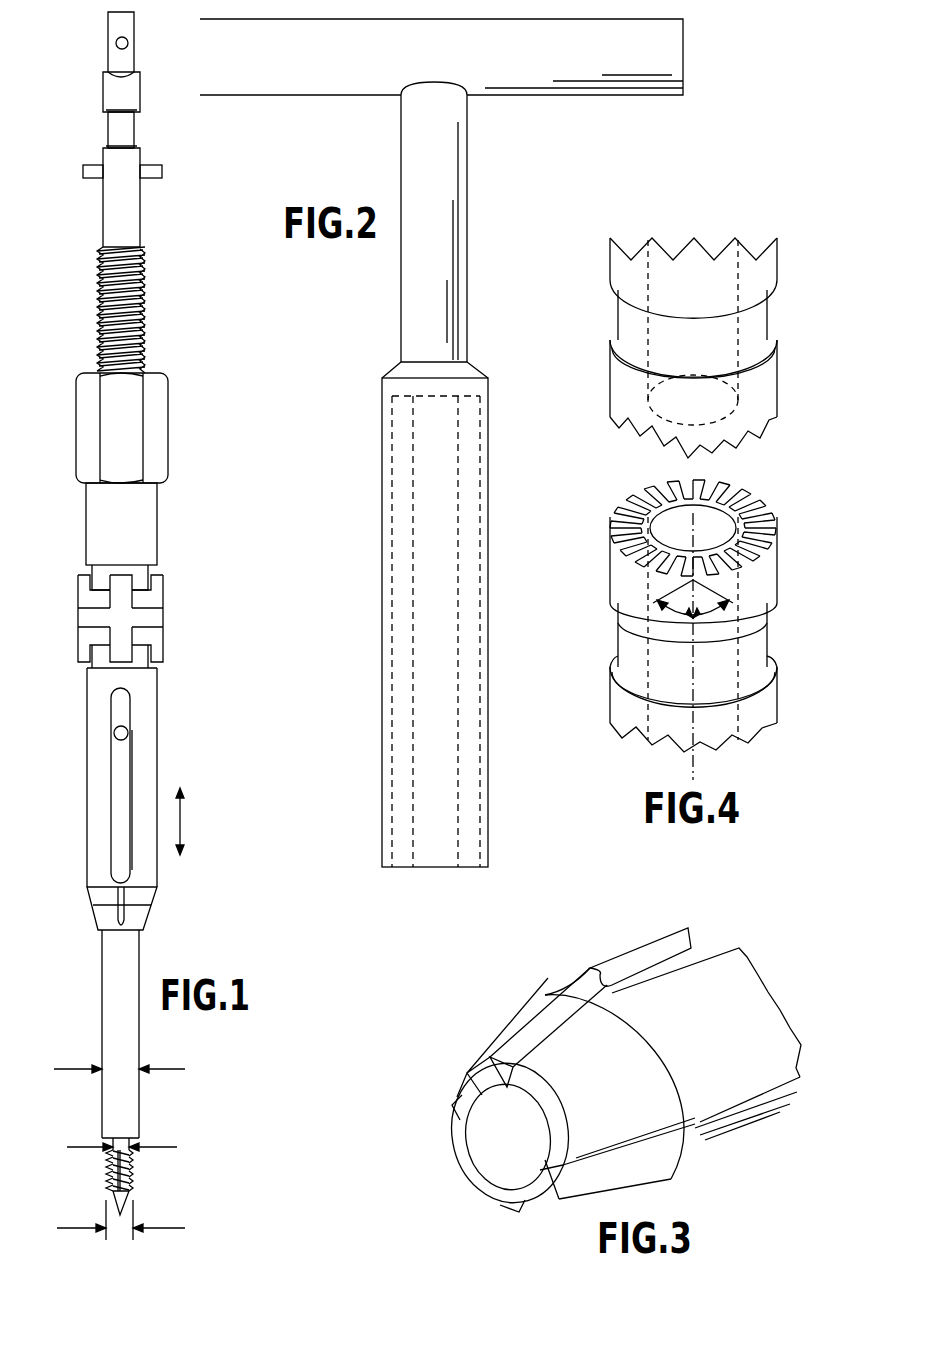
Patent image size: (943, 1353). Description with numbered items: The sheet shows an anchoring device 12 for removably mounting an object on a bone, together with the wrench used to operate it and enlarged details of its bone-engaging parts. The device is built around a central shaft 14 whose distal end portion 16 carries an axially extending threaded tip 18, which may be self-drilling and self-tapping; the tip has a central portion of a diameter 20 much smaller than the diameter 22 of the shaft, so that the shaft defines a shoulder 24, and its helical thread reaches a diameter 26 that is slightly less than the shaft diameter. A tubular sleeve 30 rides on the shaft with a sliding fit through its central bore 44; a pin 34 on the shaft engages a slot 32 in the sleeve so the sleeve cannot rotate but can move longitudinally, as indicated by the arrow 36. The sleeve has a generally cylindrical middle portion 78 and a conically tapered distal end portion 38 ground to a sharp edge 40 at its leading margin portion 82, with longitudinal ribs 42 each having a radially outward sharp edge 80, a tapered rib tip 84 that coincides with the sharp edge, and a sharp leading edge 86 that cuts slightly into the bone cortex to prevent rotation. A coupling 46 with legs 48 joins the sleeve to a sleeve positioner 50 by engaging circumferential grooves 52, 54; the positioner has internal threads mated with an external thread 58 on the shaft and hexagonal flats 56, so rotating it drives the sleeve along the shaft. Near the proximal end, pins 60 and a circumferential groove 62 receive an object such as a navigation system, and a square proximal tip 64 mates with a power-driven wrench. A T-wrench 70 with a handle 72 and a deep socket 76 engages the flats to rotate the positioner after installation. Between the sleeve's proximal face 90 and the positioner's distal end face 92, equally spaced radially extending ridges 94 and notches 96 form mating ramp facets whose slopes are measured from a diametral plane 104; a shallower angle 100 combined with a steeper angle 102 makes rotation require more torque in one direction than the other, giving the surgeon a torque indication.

In FIG. 1, the anchoring device 12 is at (212, 374).
In FIG. 1, the central shaft 14 is at (103, 214).
In FIG. 1, the distal end portion 16 is at (140, 1135).
In FIG. 1, the threaded tip 18 is at (135, 1170).
In FIG. 1, the diameter 20 is at (86, 1150).
In FIG. 1, the diameter 22 is at (70, 1069).
In FIG. 1, the shoulder 24 is at (120, 1146).
In FIG. 1, the diameter 26 is at (170, 1229).
In FIG. 1, the tubular sleeve 30 is at (93, 711).
In FIG. 4, the tubular sleeve 30 is at (777, 696).
In FIG. 3, the tubular sleeve 30 is at (632, 938).
In FIG. 1, the slot 32 is at (127, 841).
In FIG. 3, the slot 32 is at (712, 960).
In FIG. 1, the pin 34 is at (128, 733).
In FIG. 1, the arrow 36 is at (180, 824).
In FIG. 1, the distal end portion 38 is at (105, 910).
In FIG. 3, the distal end portion 38 is at (670, 1085).
In FIG. 1, the sharp edge 40 is at (139, 946).
In FIG. 3, the sharp edge 40 is at (545, 1138).
In FIG. 1, the ribs 42 is at (150, 916).
In FIG. 3, the ribs 42 is at (566, 1025).
In FIG. 4, the central bore 44 is at (713, 530).
In FIG. 3, the central bore 44 is at (488, 1156).
In FIG. 1, the coupling 46 is at (165, 619).
In FIG. 1, the legs 48 is at (121, 582).
In FIG. 1, the sleeve positioner 50 is at (86, 524).
In FIG. 4, the sleeve positioner 50 is at (777, 252).
In FIG. 1, the circumferential groove 52 is at (140, 658).
In FIG. 4, the circumferential groove 52 is at (755, 641).
In FIG. 1, the circumferential groove 54 is at (148, 572).
In FIG. 4, the circumferential groove 54 is at (760, 313).
In FIG. 1, the flats 56 is at (168, 427).
In FIG. 1, the external thread 58 is at (145, 302).
In FIG. 1, the pins 60 is at (162, 172).
In FIG. 1, the circumferential groove 62 is at (108, 131).
In FIG. 1, the proximal tip 64 is at (106, 42).
In FIG. 2, the T-wrench 70 is at (493, 235).
In FIG. 2, the handle 72 is at (292, 97).
In FIG. 2, the deep socket 76 is at (389, 606).
In FIG. 1, the middle portion 78 is at (87, 779).
In FIG. 3, the middle portion 78 is at (592, 975).
In FIG. 3, the sharp edge 80 is at (580, 1025).
In FIG. 3, the leading margin portion 82 is at (548, 1118).
In FIG. 3, the jaw edge 84 is at (494, 1066).
In FIG. 3, the sharp leading edge 86 is at (522, 1085).
In FIG. 4, the proximal face 90 is at (612, 518).
In FIG. 4, the distal end face 92 is at (614, 438).
In FIG. 4, the ridges 94 is at (728, 448).
In FIG. 4, the notches 96 is at (642, 448).
In FIG. 4, the shallower angle 100 is at (612, 606).
In FIG. 4, the steeper angle 102 is at (772, 606).
In FIG. 4, the plane 104 is at (695, 760).